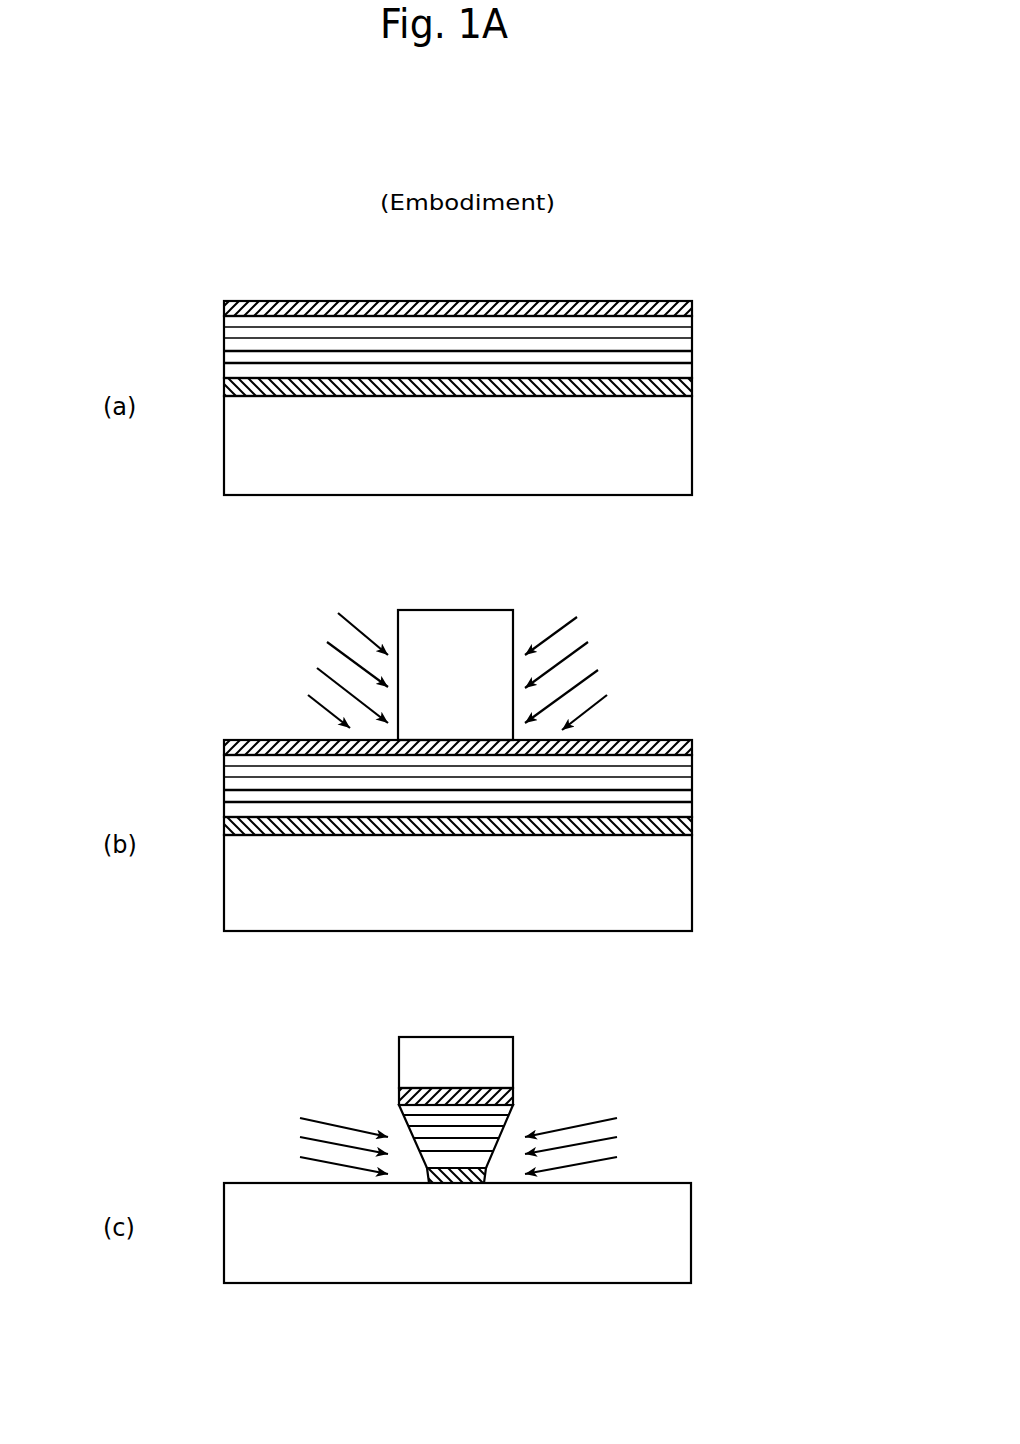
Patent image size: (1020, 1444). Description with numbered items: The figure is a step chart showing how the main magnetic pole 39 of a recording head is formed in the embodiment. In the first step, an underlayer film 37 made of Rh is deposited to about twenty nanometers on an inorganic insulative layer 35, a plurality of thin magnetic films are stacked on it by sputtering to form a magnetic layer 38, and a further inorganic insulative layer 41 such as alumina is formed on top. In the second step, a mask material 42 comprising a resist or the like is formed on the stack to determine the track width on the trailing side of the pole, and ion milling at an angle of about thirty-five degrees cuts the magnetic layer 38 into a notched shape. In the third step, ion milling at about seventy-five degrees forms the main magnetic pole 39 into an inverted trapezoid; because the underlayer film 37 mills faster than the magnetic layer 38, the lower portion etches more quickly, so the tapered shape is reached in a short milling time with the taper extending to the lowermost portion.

The inorganic insulative layer 35 is at (678, 458).
The underlayer film 37 is at (692, 387).
The magnetic layer 38 is at (699, 318).
The main magnetic pole 39 is at (670, 1105).
The inorganic insulative layer 41 is at (692, 308).
The mask material 42 is at (503, 632).